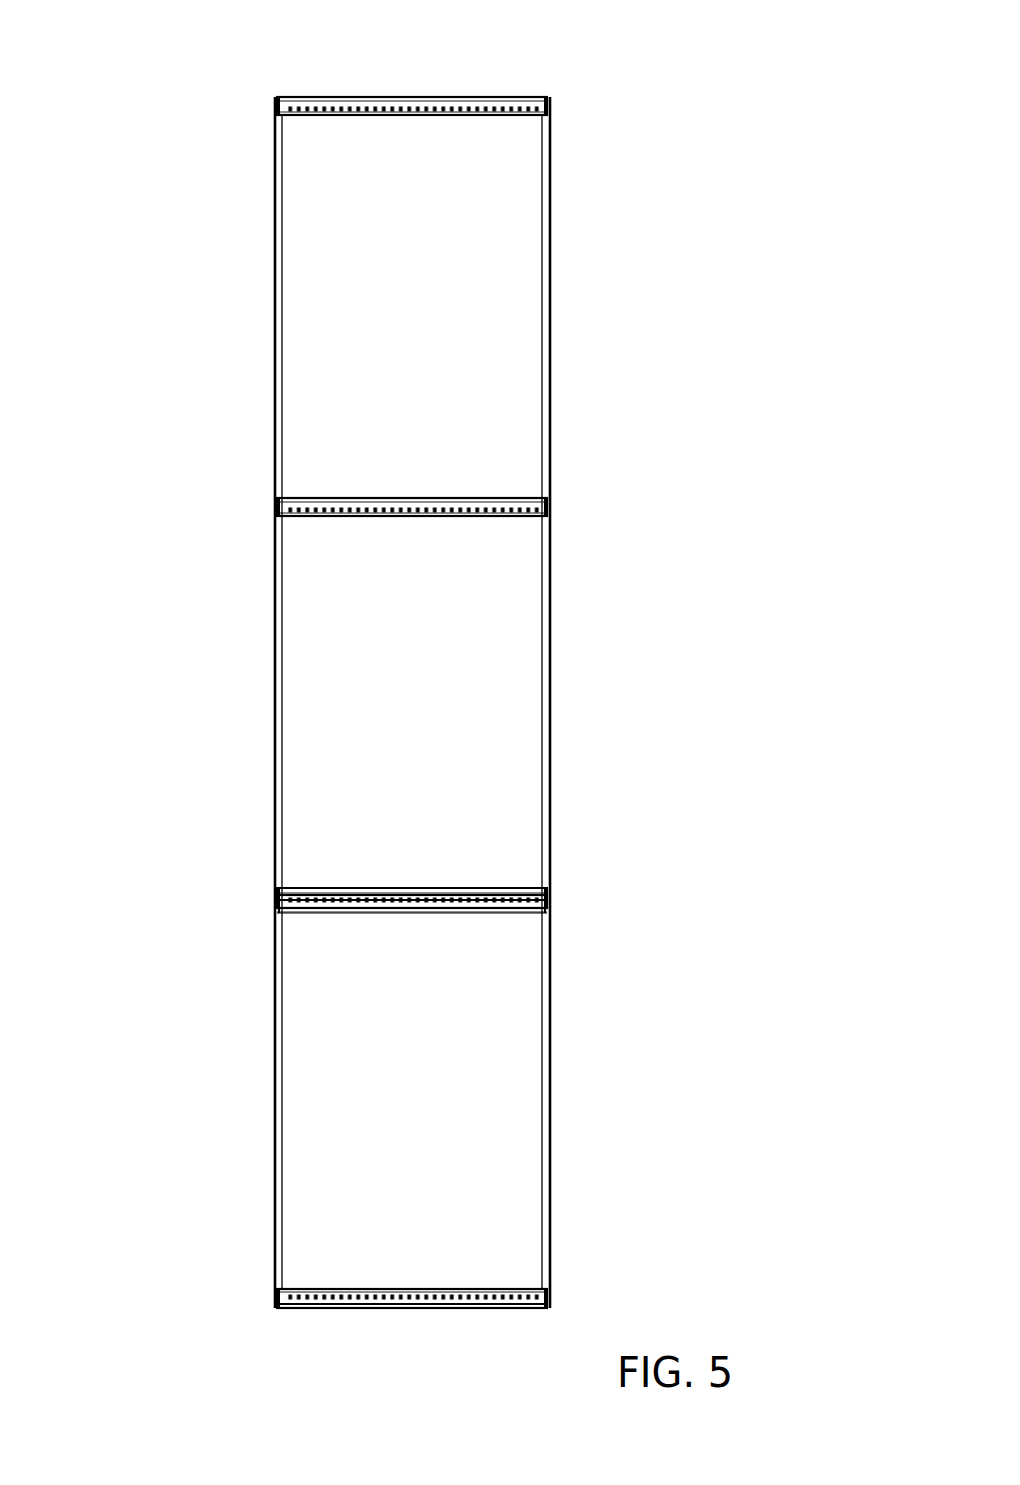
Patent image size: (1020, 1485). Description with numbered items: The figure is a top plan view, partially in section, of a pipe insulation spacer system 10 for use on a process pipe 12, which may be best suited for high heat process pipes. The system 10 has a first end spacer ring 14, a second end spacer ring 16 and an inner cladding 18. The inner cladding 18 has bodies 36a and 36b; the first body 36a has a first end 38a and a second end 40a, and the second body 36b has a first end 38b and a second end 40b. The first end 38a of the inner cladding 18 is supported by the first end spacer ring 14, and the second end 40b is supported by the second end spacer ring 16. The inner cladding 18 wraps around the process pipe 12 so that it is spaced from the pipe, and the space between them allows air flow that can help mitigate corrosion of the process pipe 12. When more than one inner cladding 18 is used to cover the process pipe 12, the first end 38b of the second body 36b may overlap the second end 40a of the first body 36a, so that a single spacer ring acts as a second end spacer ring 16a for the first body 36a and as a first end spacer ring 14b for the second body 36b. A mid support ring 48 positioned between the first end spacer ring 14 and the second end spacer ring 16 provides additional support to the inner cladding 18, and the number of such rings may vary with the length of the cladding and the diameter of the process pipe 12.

The pipe insulation spacer system 10 is at (437, 699).
The process pipe 12 is at (384, 702).
The first end spacer ring 14 is at (422, 139).
The first end spacer ring 14b is at (412, 910).
The second end spacer ring 16 is at (376, 1337).
The second end spacer ring 16a is at (463, 890).
The inner cladding 18 is at (384, 702).
The first body 36a is at (274, 333).
The second body 36b is at (274, 1247).
The first end 38a is at (366, 97).
The first end 38b is at (363, 888).
The second end 40a is at (437, 912).
The second end 40b is at (390, 1307).
The mid support ring 48 is at (443, 508).